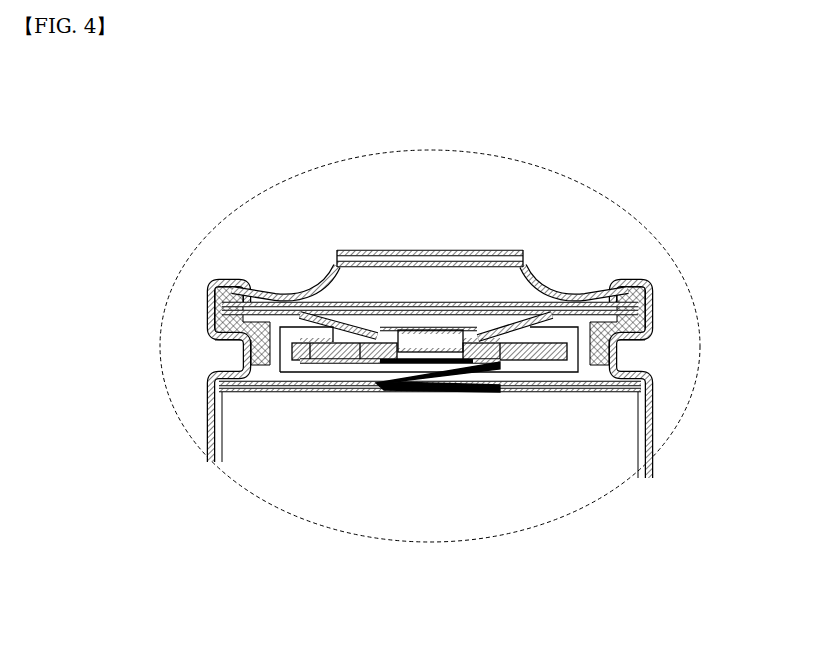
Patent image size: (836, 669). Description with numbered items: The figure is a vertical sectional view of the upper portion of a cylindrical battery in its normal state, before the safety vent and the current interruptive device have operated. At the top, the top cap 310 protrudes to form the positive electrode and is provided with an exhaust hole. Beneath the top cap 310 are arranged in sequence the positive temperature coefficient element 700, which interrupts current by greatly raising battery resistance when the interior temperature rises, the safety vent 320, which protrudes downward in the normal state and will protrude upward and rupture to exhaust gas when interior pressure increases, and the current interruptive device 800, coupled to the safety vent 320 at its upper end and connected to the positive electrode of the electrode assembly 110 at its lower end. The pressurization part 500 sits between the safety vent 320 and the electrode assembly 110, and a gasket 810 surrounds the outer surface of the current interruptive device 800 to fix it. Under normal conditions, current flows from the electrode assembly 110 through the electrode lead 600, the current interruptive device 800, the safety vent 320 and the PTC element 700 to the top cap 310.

The electrode assembly 110 is at (600, 453).
The top cap 310 is at (437, 250).
The safety vent 320 is at (327, 250).
The pressurization part 500 is at (460, 380).
The electrode lead 600 is at (455, 362).
The positive temperature coefficient (PTC) element 700 is at (535, 252).
The current interruptive device 800 is at (372, 332).
The gasket 810 is at (240, 352).